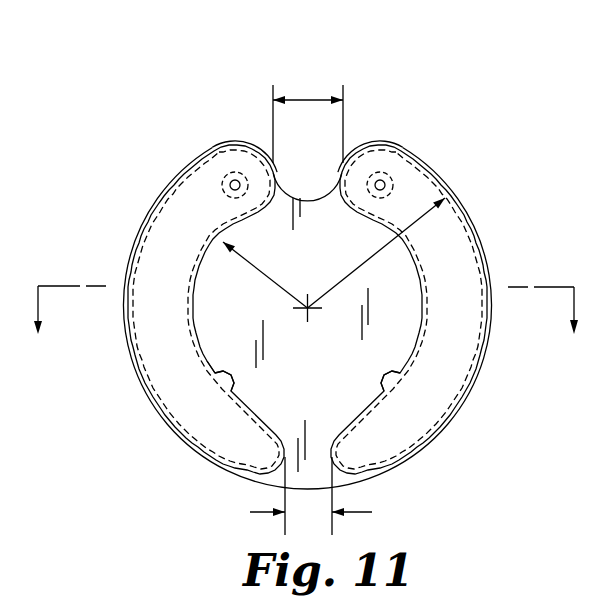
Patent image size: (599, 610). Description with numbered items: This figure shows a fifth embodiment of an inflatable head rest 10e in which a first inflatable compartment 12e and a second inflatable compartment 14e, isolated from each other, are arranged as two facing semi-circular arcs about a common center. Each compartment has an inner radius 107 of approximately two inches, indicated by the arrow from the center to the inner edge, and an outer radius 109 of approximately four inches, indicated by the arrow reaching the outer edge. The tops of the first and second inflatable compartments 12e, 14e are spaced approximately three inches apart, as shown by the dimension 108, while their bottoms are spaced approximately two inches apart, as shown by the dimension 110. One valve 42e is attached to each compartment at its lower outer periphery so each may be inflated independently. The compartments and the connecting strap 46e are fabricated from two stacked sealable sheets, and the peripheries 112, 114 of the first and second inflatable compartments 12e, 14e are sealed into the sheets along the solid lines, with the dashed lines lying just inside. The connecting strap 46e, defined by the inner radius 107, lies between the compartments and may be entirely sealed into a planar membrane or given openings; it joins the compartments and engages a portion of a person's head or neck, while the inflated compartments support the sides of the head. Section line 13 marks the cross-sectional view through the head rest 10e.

The head rest 10e is at (116, 115).
The first inflatable compartment 12e is at (457, 262).
The second inflatable compartment 14e is at (177, 206).
The valve 42e is at (232, 178).
The connecting strap 46e is at (218, 350).
The inner radius 107 is at (243, 265).
The spacing between compartment tops 108 is at (304, 96).
The outer radius 109 is at (415, 230).
The spacing between compartment bottoms 110 is at (372, 512).
The periphery of first inflatable compartment 112 is at (395, 370).
The periphery of second inflatable compartment 114 is at (233, 381).
The section line 13- 13 is at (309, 328).